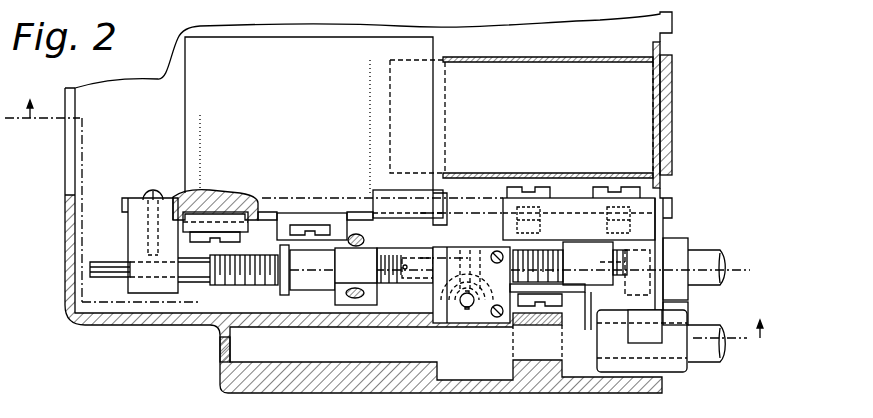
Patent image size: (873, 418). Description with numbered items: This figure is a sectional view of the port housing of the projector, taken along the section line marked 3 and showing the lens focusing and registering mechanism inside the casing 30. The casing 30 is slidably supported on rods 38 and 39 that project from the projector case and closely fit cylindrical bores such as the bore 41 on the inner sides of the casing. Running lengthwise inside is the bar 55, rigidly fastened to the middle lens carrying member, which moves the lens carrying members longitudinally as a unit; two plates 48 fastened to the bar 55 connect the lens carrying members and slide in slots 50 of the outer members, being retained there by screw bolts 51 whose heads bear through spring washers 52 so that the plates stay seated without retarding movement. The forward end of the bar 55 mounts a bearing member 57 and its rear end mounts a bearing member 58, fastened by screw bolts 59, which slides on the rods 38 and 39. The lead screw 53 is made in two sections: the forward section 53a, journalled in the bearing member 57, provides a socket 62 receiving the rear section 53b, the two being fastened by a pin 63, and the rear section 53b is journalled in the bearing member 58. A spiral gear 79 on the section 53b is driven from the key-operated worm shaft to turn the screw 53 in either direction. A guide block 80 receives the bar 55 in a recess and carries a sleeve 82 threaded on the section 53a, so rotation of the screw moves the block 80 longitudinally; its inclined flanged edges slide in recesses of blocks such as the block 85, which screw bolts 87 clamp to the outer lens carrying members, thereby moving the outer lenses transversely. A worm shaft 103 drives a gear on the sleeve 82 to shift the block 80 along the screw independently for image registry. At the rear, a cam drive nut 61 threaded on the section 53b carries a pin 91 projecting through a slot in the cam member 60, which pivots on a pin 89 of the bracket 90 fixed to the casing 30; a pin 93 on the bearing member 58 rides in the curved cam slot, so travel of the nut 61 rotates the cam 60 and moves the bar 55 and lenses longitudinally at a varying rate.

The section line 3- 3 is at (393, 225).
The casing 30 is at (88, 323).
The rod 38 is at (723, 254).
The rod 39 is at (692, 362).
The cylindrical bore 41 is at (228, 350).
The plate 48 is at (228, 203).
The slot 50 is at (188, 193).
The screw bolt 51 is at (205, 240).
The spring washer 52 is at (190, 232).
The lead screw 53 is at (391, 252).
The forward lead screw section 53a is at (252, 284).
The rear lead screw section 53b is at (549, 262).
The bar 55 is at (123, 198).
The bearing member 57 is at (133, 222).
The bearing member 58 is at (665, 232).
The screw bolt 59 is at (600, 186).
The cam member 60 is at (622, 300).
The cam drive nut 61 is at (672, 206).
The socket 62 is at (410, 278).
The pin 63 is at (408, 266).
The spiral gear 79 is at (503, 216).
The guide block 80 is at (312, 292).
The sleeve 82 is at (282, 250).
The block 85 is at (317, 222).
The screw bolt 87 is at (306, 228).
The pin 89 is at (520, 322).
The bracket 90 is at (517, 323).
The pin 91 is at (588, 302).
The pin 93 is at (689, 308).
The worm shaft 103 is at (351, 287).